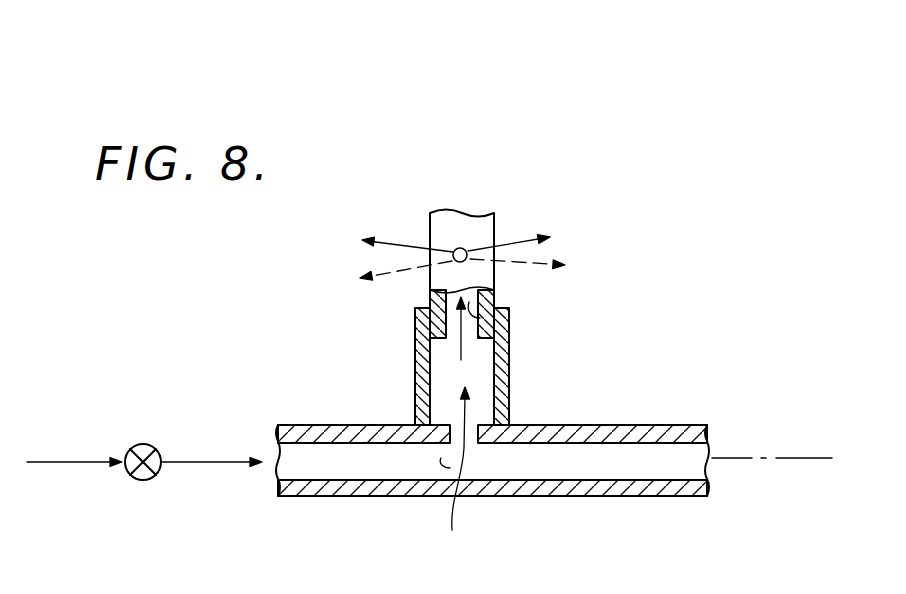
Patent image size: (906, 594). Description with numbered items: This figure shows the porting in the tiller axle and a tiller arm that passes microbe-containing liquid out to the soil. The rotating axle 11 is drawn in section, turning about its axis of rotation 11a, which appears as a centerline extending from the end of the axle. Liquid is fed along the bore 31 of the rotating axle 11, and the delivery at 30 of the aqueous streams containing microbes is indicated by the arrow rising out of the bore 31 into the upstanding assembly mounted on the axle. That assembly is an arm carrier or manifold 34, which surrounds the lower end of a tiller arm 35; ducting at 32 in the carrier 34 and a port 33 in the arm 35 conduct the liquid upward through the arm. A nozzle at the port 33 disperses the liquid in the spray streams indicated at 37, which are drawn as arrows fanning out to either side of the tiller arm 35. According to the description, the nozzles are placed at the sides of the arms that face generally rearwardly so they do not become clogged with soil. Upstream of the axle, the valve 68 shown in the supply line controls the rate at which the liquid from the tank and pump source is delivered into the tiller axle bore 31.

The rotating axle 11 is at (608, 500).
The axle axis of rotation 11a is at (757, 456).
The delivery of aqueous streams 30 is at (465, 474).
The bore of the rotating axle 31 is at (329, 472).
The ducting 32 is at (483, 322).
The port 33 is at (455, 249).
The arm carrier or manifold 34 is at (414, 378).
The tiller arm 35 is at (478, 218).
The spray streams 37 is at (366, 259).
The valve 68 is at (142, 482).